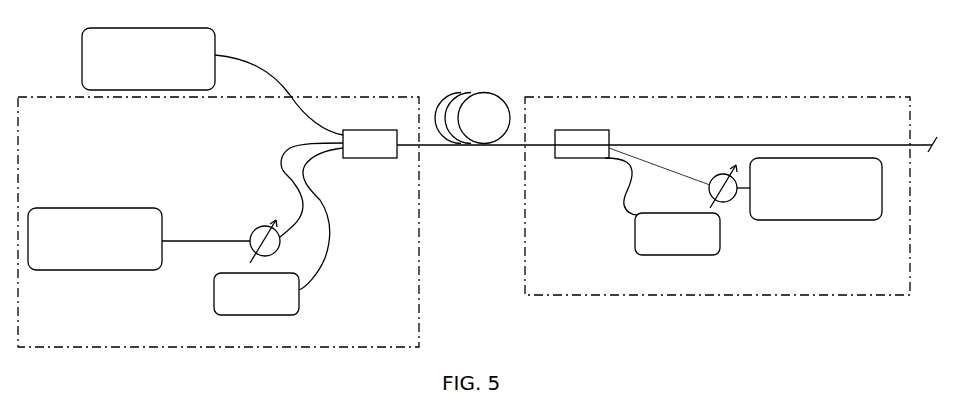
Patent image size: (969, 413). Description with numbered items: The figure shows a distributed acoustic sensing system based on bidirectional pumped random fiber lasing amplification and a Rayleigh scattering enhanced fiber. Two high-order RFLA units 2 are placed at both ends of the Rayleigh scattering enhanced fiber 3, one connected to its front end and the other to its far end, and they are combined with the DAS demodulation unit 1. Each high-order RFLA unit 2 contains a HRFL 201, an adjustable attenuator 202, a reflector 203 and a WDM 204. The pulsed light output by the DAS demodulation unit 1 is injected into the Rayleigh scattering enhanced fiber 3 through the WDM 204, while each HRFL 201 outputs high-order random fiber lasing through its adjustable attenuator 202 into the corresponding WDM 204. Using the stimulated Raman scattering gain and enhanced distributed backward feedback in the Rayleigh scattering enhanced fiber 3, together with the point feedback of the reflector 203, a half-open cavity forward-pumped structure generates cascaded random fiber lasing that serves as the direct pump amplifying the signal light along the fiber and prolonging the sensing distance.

The DAS demodulation unit 1 is at (148, 50).
The high-order random fiber lasing amplification unit 2 is at (464, 222).
The Rayleigh scattering enhanced fiber 3 is at (667, 107).
The HRFL 201 is at (455, 214).
The adjustable attenuator 202 is at (493, 209).
The reflector 203 is at (467, 277).
The WDM 204 is at (476, 131).